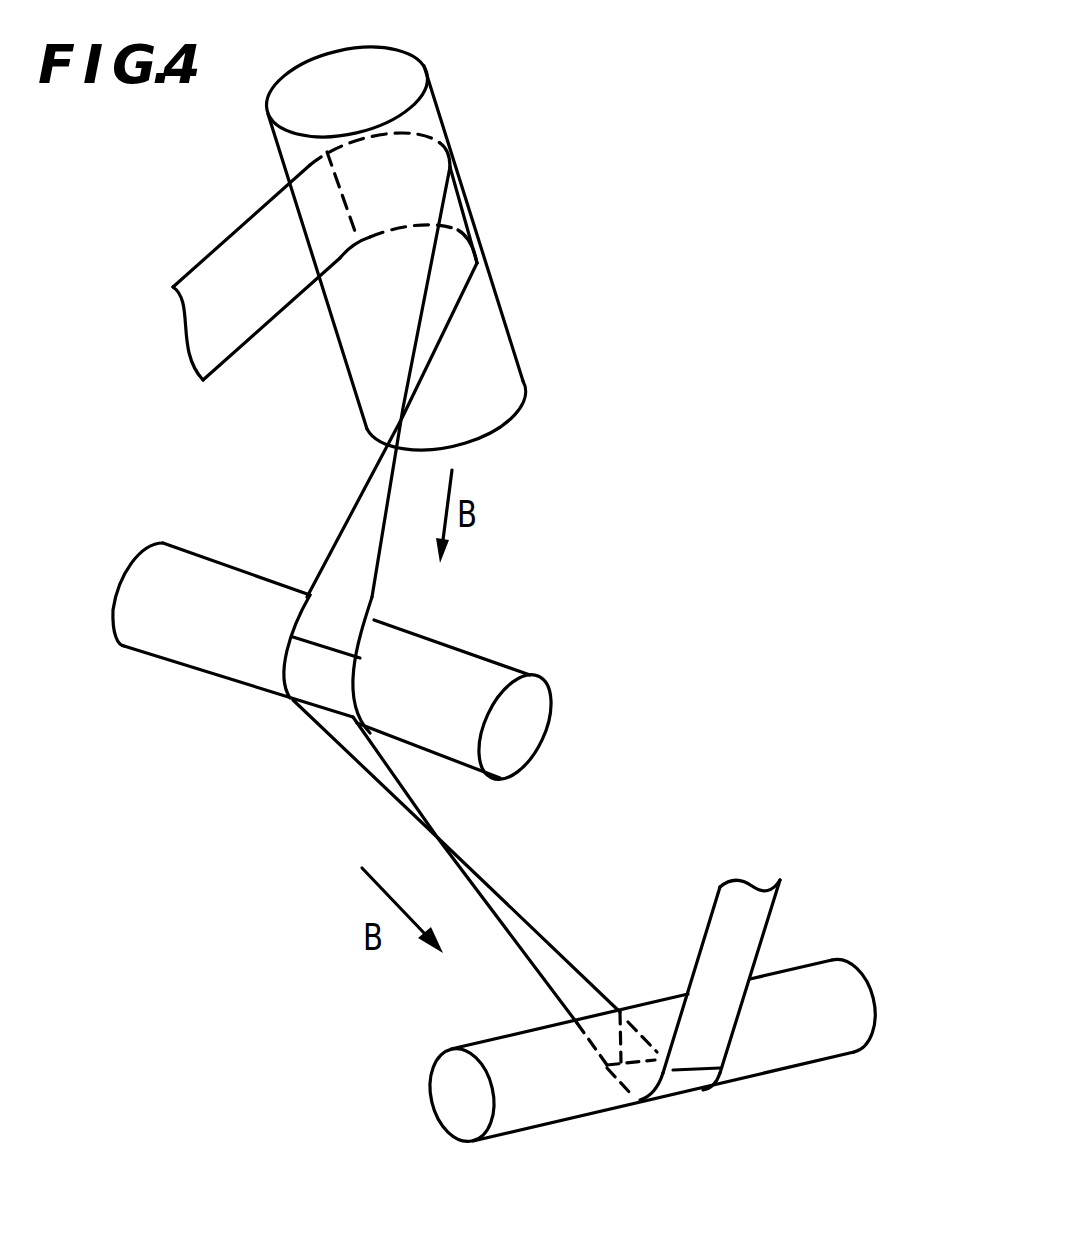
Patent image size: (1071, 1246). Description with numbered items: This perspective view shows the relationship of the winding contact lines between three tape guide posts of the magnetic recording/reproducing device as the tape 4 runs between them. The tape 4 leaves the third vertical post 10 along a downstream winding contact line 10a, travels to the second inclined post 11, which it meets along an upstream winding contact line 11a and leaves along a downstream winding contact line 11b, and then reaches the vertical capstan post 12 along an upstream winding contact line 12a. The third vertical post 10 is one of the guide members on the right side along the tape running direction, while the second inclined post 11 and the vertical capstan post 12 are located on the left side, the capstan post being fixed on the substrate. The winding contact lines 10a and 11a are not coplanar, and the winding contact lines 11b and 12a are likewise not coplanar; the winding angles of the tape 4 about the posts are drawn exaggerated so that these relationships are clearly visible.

The tape 4 is at (350, 600).
The third vertical post 10 is at (497, 355).
The downstream winding contact line 10a is at (473, 217).
The second inclined post 11 is at (394, 646).
The upstream winding contact line 11a is at (320, 643).
The downstream winding contact line 11b is at (314, 704).
The vertical capstan post 12 is at (648, 1001).
The upstream winding contact line 12a is at (619, 1010).